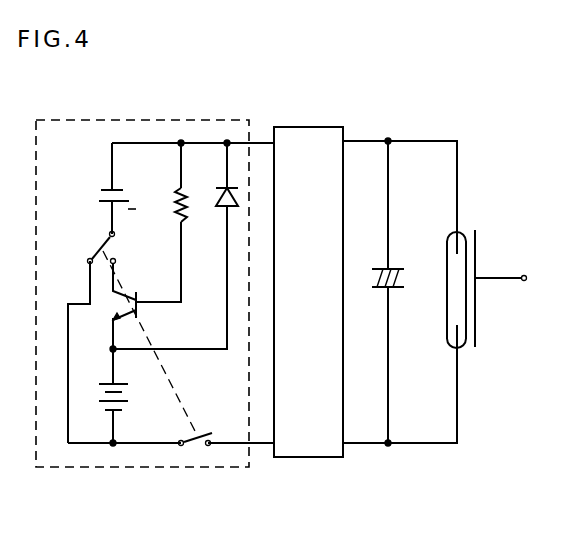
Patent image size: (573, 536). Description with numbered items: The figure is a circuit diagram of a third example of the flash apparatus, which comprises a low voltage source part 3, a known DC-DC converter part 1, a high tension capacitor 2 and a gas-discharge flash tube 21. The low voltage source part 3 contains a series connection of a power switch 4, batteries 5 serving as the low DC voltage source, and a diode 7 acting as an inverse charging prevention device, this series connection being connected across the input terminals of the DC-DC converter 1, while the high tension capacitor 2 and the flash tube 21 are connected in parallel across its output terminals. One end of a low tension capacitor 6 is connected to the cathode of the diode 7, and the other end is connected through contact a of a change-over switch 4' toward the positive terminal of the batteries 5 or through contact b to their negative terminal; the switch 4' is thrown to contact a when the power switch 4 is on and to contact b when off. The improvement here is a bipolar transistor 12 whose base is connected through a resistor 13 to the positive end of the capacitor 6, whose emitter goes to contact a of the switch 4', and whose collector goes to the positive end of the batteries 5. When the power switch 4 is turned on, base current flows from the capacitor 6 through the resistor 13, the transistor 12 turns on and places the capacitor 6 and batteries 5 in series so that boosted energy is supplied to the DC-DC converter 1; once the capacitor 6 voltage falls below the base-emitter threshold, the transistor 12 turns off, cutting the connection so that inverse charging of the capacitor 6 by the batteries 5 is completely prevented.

The DC-DC converter part 1 is at (315, 448).
The high tension capacitor 2 is at (376, 282).
The low voltage source part 3 is at (200, 119).
The power switch 4 is at (201, 414).
The change-over switch 4' is at (129, 319).
The batteries 5 is at (100, 389).
The low tension capacitor 6 is at (98, 194).
The diode 7 is at (218, 195).
The bipolar transistor 12 is at (114, 319).
The resistor 13 is at (176, 206).
The gas-discharge flash tube 21 is at (460, 244).